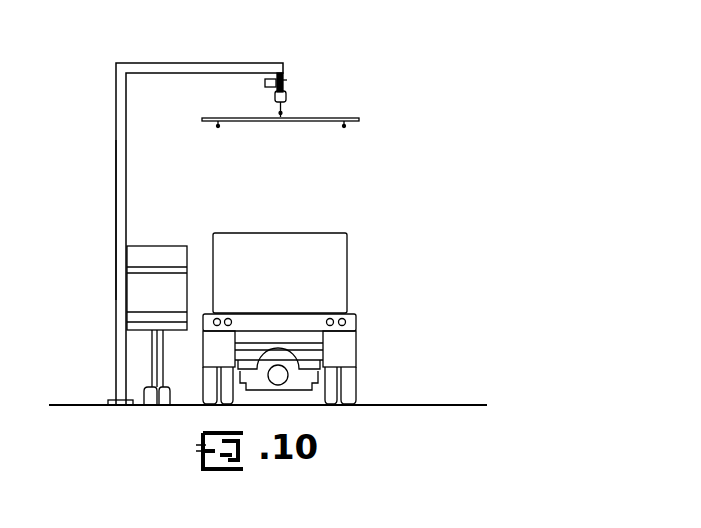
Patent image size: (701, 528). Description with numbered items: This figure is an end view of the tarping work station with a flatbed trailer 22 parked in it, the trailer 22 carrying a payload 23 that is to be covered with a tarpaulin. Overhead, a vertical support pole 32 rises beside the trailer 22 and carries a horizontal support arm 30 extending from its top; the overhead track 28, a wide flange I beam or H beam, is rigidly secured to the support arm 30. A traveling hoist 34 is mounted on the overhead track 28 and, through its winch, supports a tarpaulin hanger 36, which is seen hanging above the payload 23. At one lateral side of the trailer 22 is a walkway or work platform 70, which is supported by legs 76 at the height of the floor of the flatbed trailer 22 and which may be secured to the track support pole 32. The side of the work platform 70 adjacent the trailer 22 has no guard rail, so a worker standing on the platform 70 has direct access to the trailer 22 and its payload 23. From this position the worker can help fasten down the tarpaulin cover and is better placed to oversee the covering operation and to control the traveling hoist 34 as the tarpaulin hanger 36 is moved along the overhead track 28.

The flatbed trailer 22 is at (351, 313).
The payload 23 is at (278, 233).
The overhead track 28 is at (284, 77).
The support arm 30 is at (198, 63).
The vertical support pole 32 is at (115, 133).
The traveling hoist 34 is at (274, 96).
The tarpaulin hanger 36 is at (293, 118).
The work platform 70 is at (138, 312).
The legs 76 is at (150, 357).